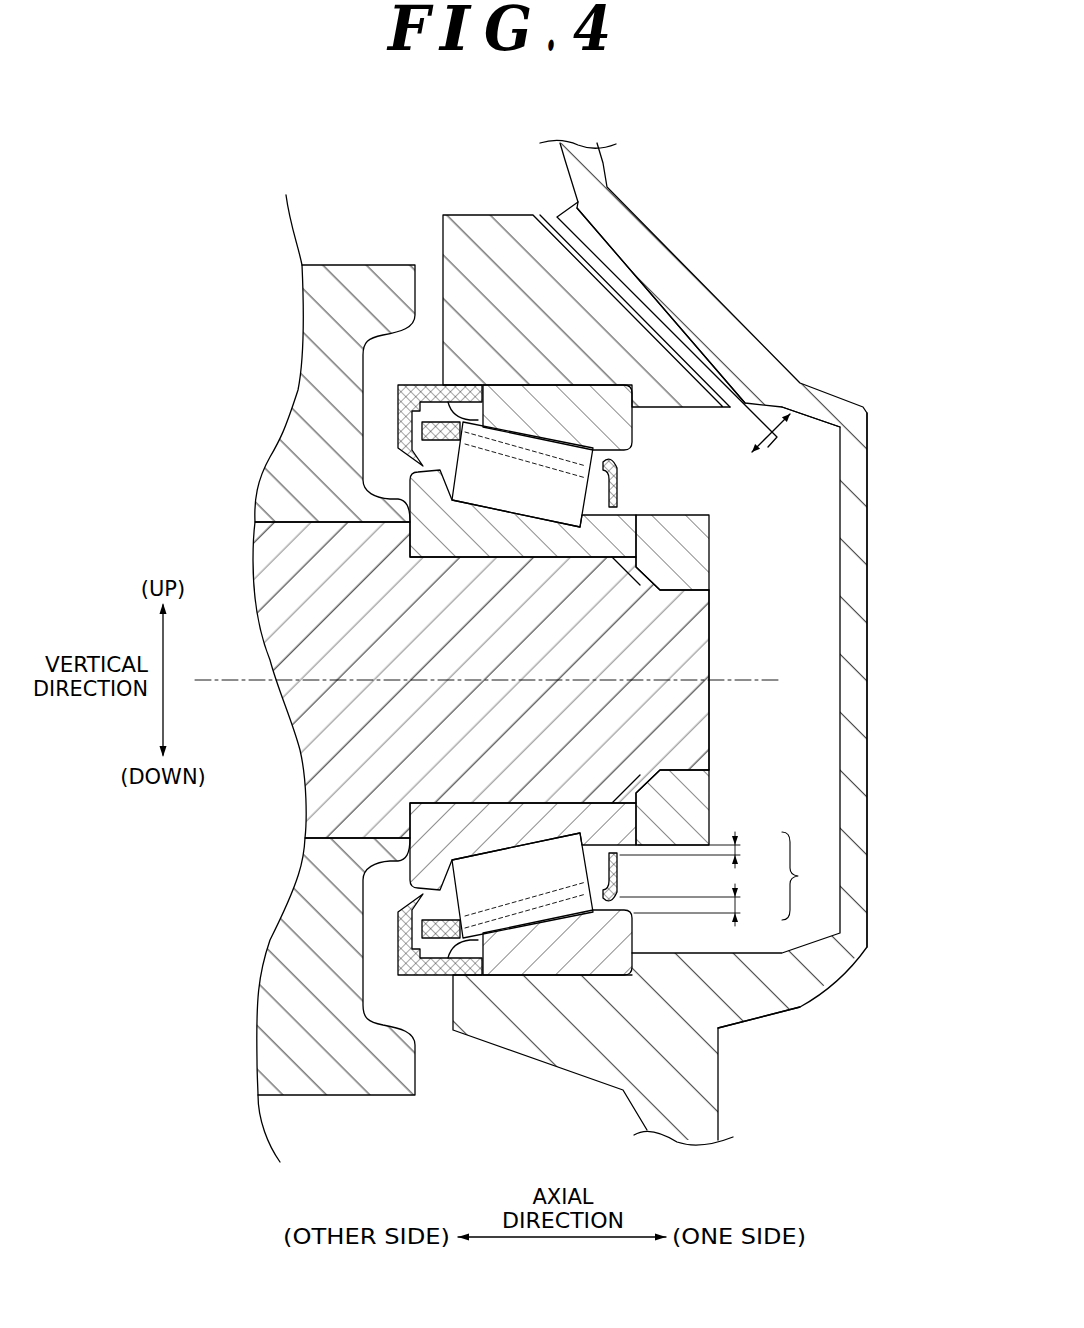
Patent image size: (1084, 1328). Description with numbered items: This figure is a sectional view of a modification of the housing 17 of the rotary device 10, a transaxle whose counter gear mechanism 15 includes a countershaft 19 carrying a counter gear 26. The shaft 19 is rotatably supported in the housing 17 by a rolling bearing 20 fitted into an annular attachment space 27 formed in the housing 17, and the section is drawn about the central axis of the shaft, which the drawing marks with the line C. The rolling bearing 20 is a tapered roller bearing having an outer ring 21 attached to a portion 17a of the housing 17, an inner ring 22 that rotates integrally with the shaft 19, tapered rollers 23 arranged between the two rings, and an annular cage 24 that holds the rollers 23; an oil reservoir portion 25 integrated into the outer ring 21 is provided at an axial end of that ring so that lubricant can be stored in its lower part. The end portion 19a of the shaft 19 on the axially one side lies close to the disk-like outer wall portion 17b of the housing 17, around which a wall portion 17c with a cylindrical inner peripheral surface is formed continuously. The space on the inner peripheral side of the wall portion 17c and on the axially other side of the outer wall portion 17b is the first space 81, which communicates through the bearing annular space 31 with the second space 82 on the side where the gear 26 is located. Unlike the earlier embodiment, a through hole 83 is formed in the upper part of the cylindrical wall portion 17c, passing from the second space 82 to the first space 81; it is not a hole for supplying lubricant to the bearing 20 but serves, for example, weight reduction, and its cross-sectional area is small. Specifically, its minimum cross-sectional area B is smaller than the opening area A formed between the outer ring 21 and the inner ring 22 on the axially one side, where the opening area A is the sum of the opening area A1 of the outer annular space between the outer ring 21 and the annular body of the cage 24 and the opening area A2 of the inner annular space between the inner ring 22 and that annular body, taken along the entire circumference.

The rotary device 10 is at (875, 497).
The counter gear mechanism 15 is at (357, 258).
The housing 17 is at (877, 750).
The portion of the housing 17a is at (727, 993).
The outer wall portion 17b is at (868, 660).
The wall portion 17c is at (698, 345).
The countershaft 19 is at (330, 733).
The end portion of the shaft 19a is at (690, 636).
The rolling bearing 20 is at (636, 428).
The outer ring 21 is at (634, 938).
The inner ring 22 is at (447, 818).
The tapered rollers 23 is at (503, 868).
The annular cage 24 is at (620, 868).
The oil reservoir portion 25 is at (430, 985).
The counter gear 26 is at (318, 385).
The attachment space 27 is at (553, 378).
The bearing annular space 31 is at (634, 458).
The first space 81 is at (816, 440).
The second space 82 is at (409, 350).
The through hole 83 is at (656, 300).
The opening area A is at (804, 876).
The opening area of the outer annular space A1 is at (701, 905).
The opening area of the inner annular space A2 is at (701, 851).
The minimum cross-sectional area of the through hole B is at (771, 444).
The center line C is at (228, 678).